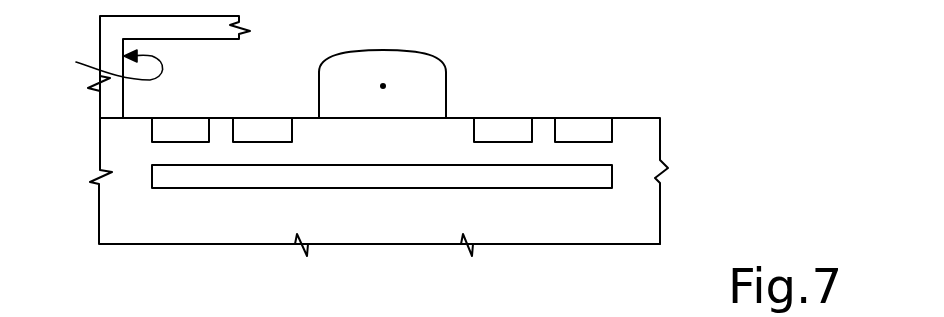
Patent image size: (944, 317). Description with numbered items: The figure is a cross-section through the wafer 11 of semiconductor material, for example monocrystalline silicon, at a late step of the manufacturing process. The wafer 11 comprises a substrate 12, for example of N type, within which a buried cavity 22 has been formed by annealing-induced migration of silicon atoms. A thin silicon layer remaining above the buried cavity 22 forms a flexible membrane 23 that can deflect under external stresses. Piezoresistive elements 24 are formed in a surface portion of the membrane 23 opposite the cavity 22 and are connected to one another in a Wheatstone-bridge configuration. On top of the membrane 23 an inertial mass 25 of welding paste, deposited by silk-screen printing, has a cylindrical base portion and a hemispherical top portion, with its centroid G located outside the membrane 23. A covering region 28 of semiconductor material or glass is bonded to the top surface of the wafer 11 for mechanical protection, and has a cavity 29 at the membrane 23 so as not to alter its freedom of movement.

The wafer 11 is at (680, 190).
The substrate 12 is at (640, 227).
The buried cavity 22 is at (602, 182).
The membrane 23 is at (313, 130).
The piezoresistive elements 24 is at (163, 128).
The inertial mass 25 is at (439, 102).
The covering region 28 is at (106, 35).
The cavity 29 is at (104, 65).